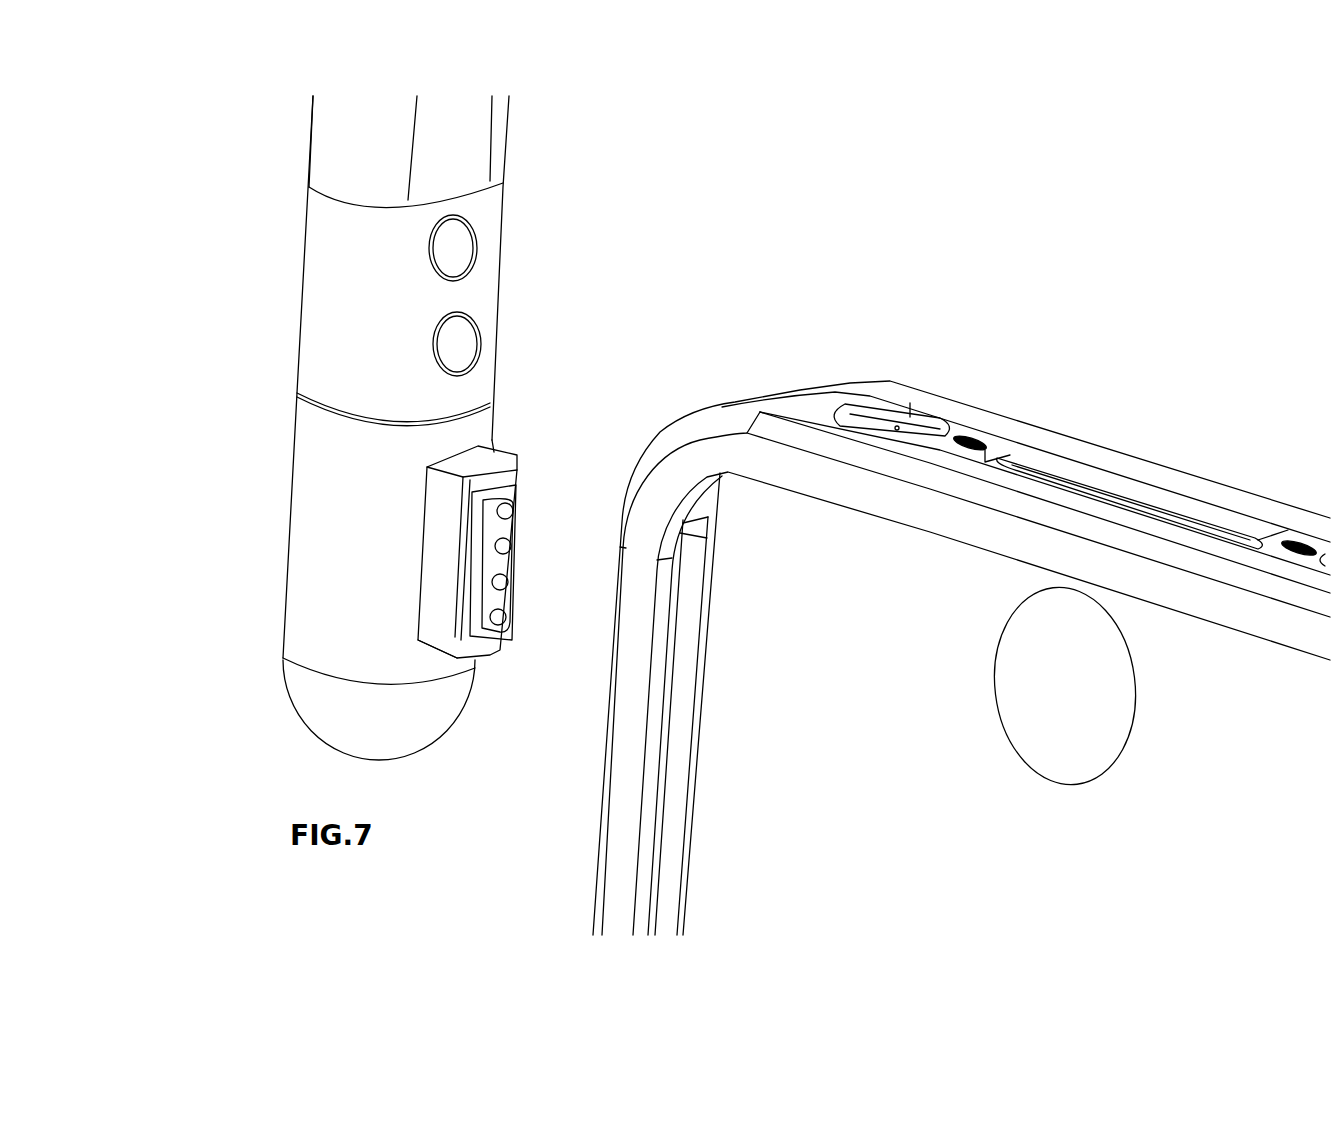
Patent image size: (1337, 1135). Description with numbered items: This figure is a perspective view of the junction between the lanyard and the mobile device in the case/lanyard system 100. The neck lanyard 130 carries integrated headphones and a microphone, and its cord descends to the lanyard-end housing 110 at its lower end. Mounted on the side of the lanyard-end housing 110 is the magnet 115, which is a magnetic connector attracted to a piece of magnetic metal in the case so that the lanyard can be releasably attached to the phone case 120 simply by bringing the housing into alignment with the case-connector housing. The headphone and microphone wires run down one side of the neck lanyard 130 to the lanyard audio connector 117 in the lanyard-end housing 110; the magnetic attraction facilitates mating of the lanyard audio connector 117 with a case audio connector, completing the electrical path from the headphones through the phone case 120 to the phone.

The case/lanyard system 100 is at (977, 372).
The lanyard-end housing 110 is at (313, 620).
The magnet 115 is at (503, 472).
The lanyard audio connector 117 is at (515, 497).
The phone case 120 is at (905, 395).
The neck lanyard 130 is at (473, 135).